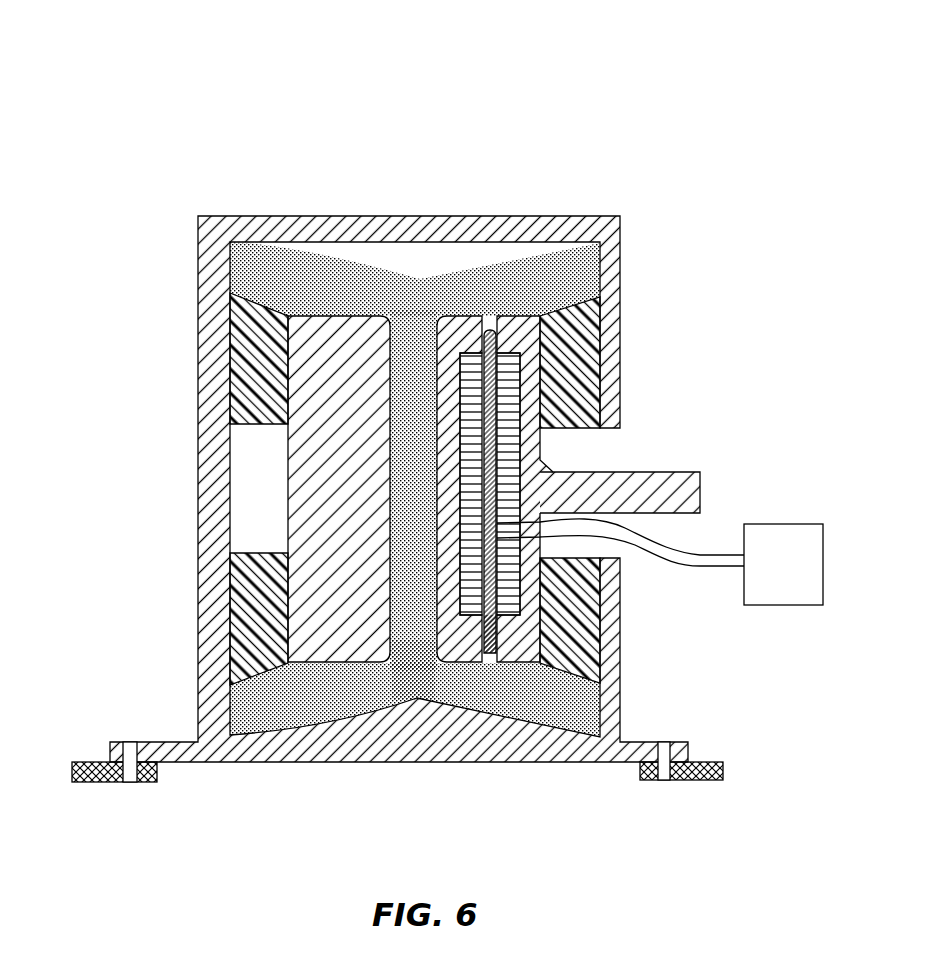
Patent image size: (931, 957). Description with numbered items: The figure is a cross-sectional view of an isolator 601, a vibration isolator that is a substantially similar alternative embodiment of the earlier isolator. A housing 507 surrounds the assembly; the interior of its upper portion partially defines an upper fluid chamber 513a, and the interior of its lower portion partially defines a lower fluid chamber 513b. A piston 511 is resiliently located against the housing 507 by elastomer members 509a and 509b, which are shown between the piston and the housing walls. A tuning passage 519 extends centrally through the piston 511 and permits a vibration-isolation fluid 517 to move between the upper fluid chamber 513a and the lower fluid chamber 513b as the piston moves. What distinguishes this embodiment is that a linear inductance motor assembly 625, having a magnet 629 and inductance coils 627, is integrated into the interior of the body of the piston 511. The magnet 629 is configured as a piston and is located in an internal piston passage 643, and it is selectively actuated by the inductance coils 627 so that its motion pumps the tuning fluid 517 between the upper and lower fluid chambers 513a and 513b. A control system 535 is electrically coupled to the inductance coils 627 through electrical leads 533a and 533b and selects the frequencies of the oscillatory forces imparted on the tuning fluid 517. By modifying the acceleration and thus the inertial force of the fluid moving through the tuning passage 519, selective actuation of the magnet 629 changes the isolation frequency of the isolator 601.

The isolator 601 is at (168, 70).
The housing 507 is at (198, 250).
The elastomer member 509a is at (568, 360).
The elastomer member 509b is at (570, 622).
The piston 511 is at (666, 473).
The upper fluid chamber 513a is at (566, 262).
The lower fluid chamber 513b is at (310, 697).
The vibration-isolation fluid 517 is at (415, 680).
The tuning passage 519 is at (410, 489).
The linear inductance motor assembly 625 is at (545, 477).
The inductance coils 627 is at (510, 600).
The magnet 629 is at (492, 567).
The internal piston passage 643 is at (490, 658).
The electrical lead 533a is at (707, 554).
The electrical lead 533b is at (707, 567).
The control system 535 is at (804, 580).